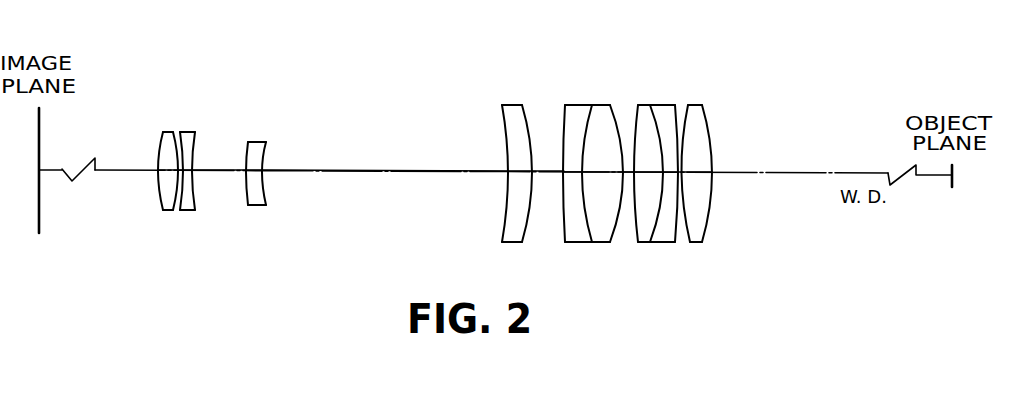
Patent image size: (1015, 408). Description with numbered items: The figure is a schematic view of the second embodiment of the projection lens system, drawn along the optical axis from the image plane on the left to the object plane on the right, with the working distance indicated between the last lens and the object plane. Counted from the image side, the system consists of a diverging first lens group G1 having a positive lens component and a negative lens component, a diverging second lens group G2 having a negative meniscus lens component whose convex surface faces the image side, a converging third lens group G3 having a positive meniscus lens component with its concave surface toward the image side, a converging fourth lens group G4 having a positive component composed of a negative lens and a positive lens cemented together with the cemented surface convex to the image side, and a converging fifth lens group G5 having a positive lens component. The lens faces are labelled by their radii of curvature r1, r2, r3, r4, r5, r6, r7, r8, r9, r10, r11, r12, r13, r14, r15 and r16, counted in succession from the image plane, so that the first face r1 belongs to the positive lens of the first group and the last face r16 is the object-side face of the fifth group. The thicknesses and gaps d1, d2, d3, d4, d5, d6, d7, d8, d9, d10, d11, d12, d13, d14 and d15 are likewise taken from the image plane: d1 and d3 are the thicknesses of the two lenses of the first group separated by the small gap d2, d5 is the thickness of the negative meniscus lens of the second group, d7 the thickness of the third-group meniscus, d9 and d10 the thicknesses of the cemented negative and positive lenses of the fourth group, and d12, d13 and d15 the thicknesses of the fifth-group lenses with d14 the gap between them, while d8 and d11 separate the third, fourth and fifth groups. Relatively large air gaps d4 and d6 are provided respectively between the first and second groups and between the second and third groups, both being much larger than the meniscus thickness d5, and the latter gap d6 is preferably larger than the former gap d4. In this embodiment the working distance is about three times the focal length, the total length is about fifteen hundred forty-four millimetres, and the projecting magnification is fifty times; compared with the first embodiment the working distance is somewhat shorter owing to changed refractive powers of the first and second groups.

The first lens group G1 is at (213, 62).
The second lens group G2 is at (255, 140).
The third lens group G3 is at (510, 103).
The fourth lens group G4 is at (618, 63).
The fifth lens group G5 is at (712, 63).
The first lens face radius of curvature r1 is at (163, 201).
The second lens face radius of curvature r2 is at (170, 206).
The third lens face radius of curvature r3 is at (182, 208).
The fourth lens face radius of curvature r4 is at (197, 193).
The fifth lens face radius of curvature r5 is at (248, 205).
The sixth lens face radius of curvature r6 is at (267, 204).
The seventh lens face radius of curvature r7 is at (502, 230).
The eighth lens face radius of curvature r8 is at (521, 234).
The ninth lens face radius of curvature r9 is at (565, 233).
The tenth lens face radius of curvature r10 is at (592, 236).
The eleventh lens face radius of curvature r11 is at (611, 240).
The twelfth lens face radius of curvature r12 is at (637, 240).
The thirteenth lens face radius of curvature r13 is at (654, 240).
The fourteenth lens face radius of curvature r14 is at (676, 238).
The fifteenth lens face radius of curvature r15 is at (690, 238).
The sixteenth lens face radius of curvature r16 is at (709, 230).
The first lens thickness d1 is at (170, 163).
The second lens gap d2 is at (178, 169).
The third lens thickness d3 is at (180, 175).
The air gap between first and second groups d4 is at (219, 160).
The negative meniscus lens thickness d5 is at (264, 168).
The air gap between second and third groups d6 is at (385, 160).
The seventh lens thickness d7 is at (510, 168).
The eighth lens gap d8 is at (548, 161).
The ninth lens thickness d9 is at (575, 170).
The tenth lens thickness d10 is at (602, 161).
The eleventh lens gap d11 is at (623, 168).
The twelfth lens thickness d12 is at (650, 99).
The thirteenth lens thickness d13 is at (668, 172).
The fourteenth lens gap d14 is at (682, 173).
The fifteenth lens thickness d15 is at (706, 174).